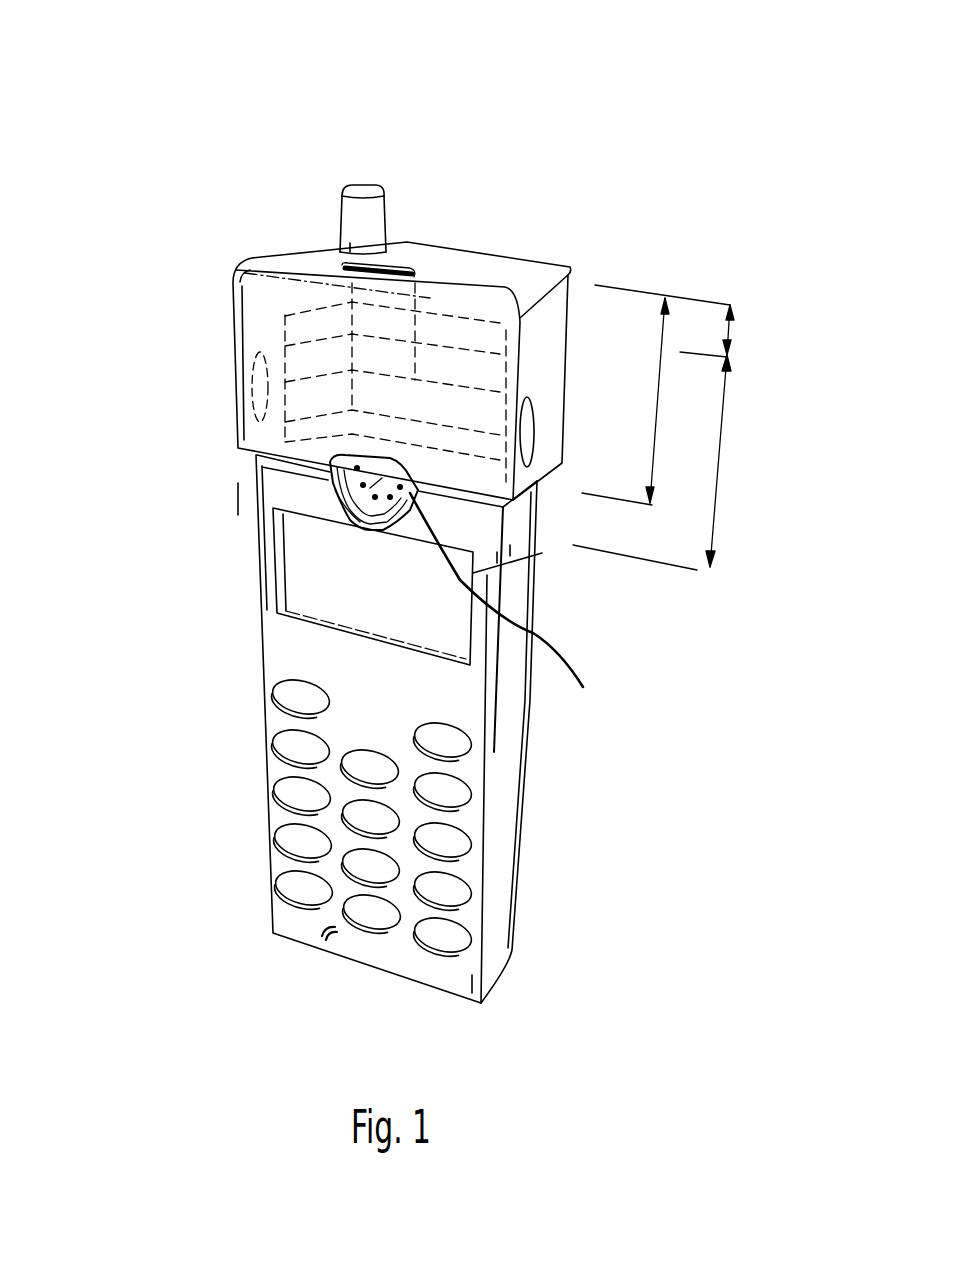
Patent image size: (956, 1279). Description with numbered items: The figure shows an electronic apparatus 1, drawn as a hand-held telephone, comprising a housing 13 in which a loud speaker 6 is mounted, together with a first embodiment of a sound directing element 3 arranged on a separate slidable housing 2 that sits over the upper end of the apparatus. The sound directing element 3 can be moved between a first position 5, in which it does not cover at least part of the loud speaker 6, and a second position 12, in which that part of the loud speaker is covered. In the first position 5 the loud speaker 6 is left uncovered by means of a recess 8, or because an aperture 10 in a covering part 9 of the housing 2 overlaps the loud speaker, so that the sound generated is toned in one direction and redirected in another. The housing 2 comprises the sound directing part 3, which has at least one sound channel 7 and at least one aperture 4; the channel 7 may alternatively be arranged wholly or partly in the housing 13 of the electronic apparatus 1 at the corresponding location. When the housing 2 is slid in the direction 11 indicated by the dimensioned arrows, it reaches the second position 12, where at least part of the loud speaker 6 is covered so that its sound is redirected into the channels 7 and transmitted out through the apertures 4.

The electronic apparatus 1 is at (722, 84).
The housing 2 is at (567, 265).
The sound directing element 3 is at (577, 310).
The aperture 4 is at (393, 247).
The first position 5 is at (657, 405).
The loud speaker 6 is at (330, 477).
The sound channel 7 is at (407, 313).
The recess 8 is at (512, 612).
The covering part 9 is at (335, 490).
The aperture 10 is at (327, 468).
The direction 11 is at (733, 320).
The second position 12 is at (720, 457).
The housing 13 is at (483, 727).